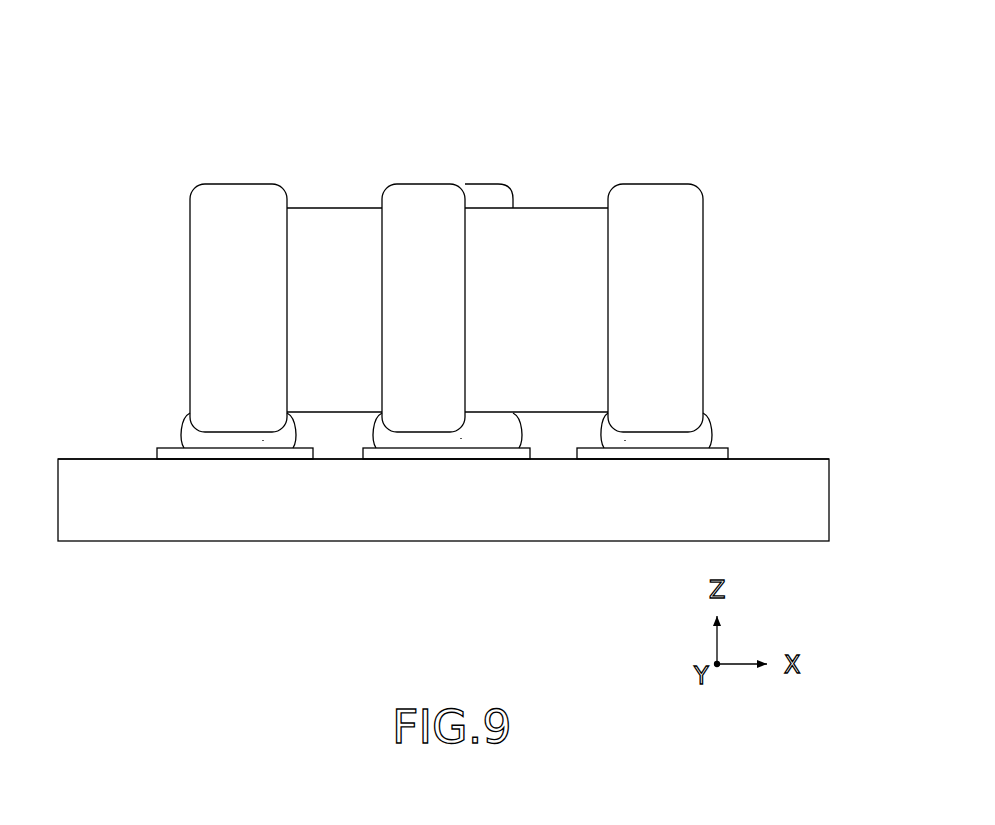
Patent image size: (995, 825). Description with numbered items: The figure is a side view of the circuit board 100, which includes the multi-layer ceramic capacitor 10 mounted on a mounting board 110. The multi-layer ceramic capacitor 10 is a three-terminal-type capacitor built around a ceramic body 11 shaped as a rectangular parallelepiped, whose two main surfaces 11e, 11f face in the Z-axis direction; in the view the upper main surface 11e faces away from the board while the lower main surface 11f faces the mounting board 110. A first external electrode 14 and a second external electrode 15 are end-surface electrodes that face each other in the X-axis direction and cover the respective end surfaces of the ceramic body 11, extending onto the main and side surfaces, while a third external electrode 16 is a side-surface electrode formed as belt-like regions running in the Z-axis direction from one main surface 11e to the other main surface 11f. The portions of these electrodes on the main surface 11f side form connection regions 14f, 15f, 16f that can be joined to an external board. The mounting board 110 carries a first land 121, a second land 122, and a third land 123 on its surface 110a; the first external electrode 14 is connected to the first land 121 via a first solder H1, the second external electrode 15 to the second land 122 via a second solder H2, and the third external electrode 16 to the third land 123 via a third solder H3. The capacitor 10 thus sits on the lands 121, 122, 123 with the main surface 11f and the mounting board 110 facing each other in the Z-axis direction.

The circuit board 100 is at (110, 85).
The multi-layer ceramic capacitor 10 is at (238, 181).
The ceramic body 11 is at (355, 206).
The main surface 11e is at (543, 207).
The main surface 11f is at (537, 415).
The first external electrode 14 is at (193, 207).
The second external electrode 15 is at (695, 203).
The third external electrode 16 is at (495, 190).
The connection region 14f is at (243, 437).
The connection region 15f is at (650, 436).
The connection region 16f is at (423, 446).
The mounting board 110 is at (117, 548).
The mounting surface of substrate 110a is at (782, 458).
The first connection electrode (land) 121 is at (168, 447).
The second connection electrode (land) 122 is at (722, 450).
The third connection electrode (land) 123 is at (367, 452).
The first solder H1 is at (263, 440).
The second solder H2 is at (625, 440).
The third solder H3 is at (461, 438).